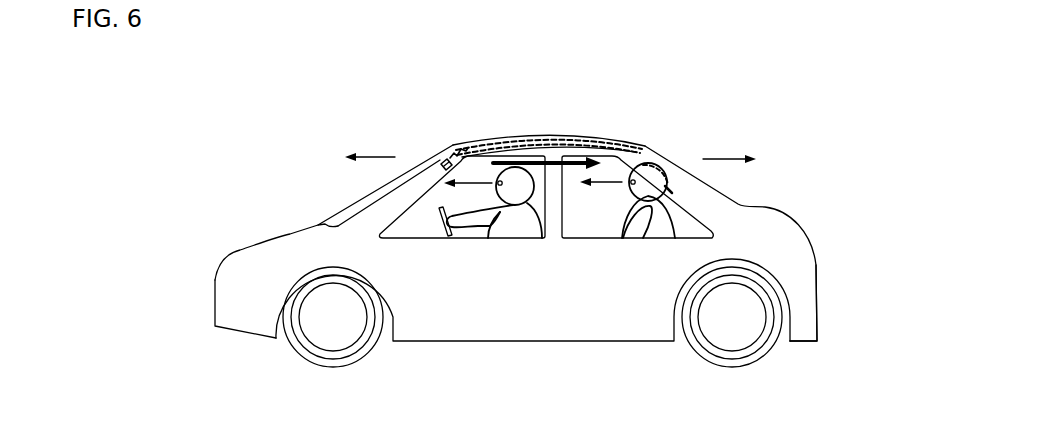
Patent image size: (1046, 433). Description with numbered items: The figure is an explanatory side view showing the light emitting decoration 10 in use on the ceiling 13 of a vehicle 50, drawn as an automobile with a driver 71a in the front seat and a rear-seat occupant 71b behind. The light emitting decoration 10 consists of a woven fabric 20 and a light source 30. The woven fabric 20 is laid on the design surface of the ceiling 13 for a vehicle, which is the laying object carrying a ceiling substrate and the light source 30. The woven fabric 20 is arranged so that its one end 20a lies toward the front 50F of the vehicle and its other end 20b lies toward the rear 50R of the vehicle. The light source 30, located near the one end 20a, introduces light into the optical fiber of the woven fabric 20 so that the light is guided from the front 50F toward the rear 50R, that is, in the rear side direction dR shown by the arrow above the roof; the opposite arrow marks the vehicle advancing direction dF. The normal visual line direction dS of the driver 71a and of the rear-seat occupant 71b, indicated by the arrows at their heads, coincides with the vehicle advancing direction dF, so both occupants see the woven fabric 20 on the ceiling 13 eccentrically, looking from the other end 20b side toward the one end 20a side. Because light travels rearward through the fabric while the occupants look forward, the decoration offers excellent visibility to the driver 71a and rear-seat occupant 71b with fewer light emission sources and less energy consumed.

The light emitting decoration 10 is at (262, 84).
The ceiling for a vehicle 13 is at (581, 141).
The woven fabric 20 is at (545, 113).
The one end of the woven fabric 20a is at (458, 147).
The other end of the woven fabric 20b is at (640, 151).
The light source 30 is at (443, 160).
The vehicle 50 is at (290, 233).
The front of the vehicle 50F is at (215, 296).
The rear of the vehicle 50R is at (817, 298).
The driver 71a is at (507, 232).
The rear-seat occupant 71b is at (652, 230).
The vehicle advancing direction dF is at (377, 157).
The rear side direction of the vehicle dR is at (727, 158).
The normal visual line direction of the occupant dS is at (468, 183).